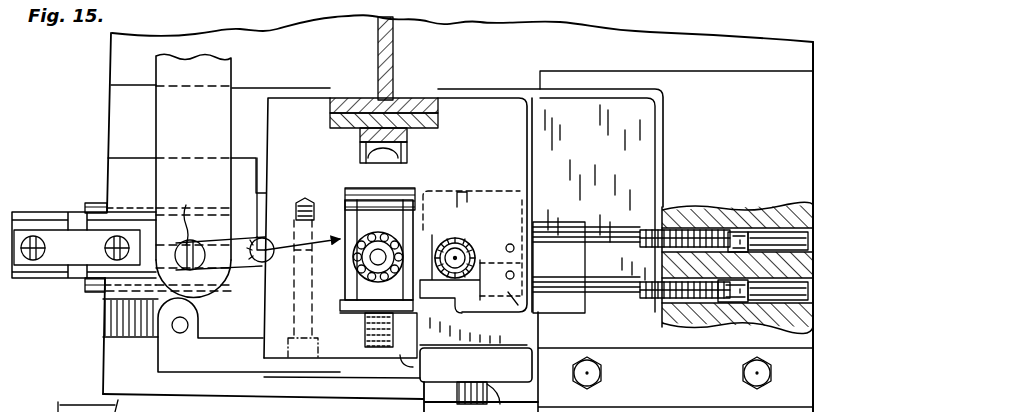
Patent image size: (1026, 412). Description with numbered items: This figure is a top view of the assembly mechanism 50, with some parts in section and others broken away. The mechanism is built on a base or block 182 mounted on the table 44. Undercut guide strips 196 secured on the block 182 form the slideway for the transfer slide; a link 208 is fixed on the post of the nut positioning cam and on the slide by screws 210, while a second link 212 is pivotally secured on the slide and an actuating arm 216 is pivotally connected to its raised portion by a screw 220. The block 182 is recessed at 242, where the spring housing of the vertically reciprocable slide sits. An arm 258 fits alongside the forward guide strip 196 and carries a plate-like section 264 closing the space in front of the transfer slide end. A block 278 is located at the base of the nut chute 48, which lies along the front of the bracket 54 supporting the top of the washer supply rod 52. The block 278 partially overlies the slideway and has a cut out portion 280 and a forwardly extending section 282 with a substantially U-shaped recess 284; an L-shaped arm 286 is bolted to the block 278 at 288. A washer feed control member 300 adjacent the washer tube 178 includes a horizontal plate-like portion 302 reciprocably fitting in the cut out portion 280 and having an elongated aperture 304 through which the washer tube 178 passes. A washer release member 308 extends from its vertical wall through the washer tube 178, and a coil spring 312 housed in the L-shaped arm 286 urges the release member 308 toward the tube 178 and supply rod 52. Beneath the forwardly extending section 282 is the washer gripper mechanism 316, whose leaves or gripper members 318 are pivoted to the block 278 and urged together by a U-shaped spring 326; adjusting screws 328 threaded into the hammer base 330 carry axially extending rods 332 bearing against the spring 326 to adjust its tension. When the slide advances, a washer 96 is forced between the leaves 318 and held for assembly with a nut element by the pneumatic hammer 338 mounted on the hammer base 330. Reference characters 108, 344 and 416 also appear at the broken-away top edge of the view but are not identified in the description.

The table 44 is at (758, 44).
The nut chute 48 is at (351, 110).
The assembly mechanism 50 is at (450, 163).
The washer supply rod 52 is at (378, 227).
The bracket 54 is at (394, 61).
The washer 96 is at (378, 255).
The member 108 is at (541, 5).
The washer tube 178 is at (400, 187).
The base or block 182 is at (122, 97).
The undercut guide strips 196 is at (125, 190).
The link 208 is at (55, 232).
The screws 210 is at (106, 247).
The link 212 is at (266, 217).
The actuating arm 216 is at (217, 77).
The screw 220 is at (196, 225).
The recess 242 is at (582, 206).
The arm 258 is at (173, 352).
The plate-like section 264 is at (588, 335).
The block 278 is at (468, 112).
The cut out portion 280 is at (341, 218).
The forwardly extending section 282 is at (545, 314).
The U-shaped recess 284 is at (475, 247).
The L-shaped arm 286 is at (429, 368).
The bolt connection 288 is at (293, 309).
The washer feed control member 300 is at (302, 264).
The horizontal plate-like portion 302 is at (432, 200).
The elongated aperture 304 is at (325, 347).
The washer release member 308 is at (360, 307).
The coil spring 312 is at (373, 365).
The washer gripper mechanism 316 is at (537, 207).
The leaves or gripper members 318 is at (442, 297).
The U-shaped spring 326 is at (523, 270).
The adjusting screws 328 is at (690, 292).
The hammer base 330 is at (712, 92).
The axially extending rods 332 is at (617, 230).
The pneumatic hammer 338 is at (620, 290).
The member 344 is at (469, 5).
The member 416 is at (670, 6).